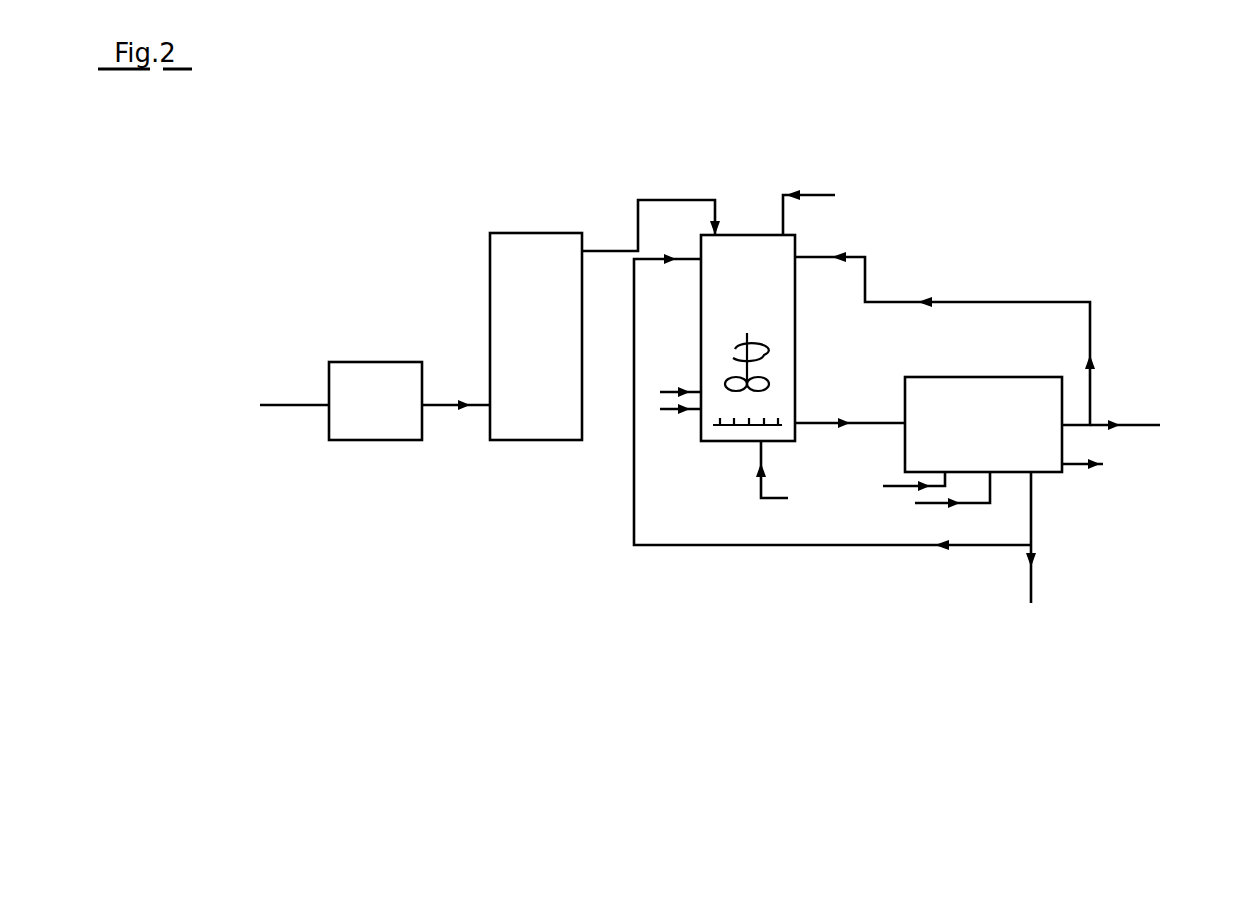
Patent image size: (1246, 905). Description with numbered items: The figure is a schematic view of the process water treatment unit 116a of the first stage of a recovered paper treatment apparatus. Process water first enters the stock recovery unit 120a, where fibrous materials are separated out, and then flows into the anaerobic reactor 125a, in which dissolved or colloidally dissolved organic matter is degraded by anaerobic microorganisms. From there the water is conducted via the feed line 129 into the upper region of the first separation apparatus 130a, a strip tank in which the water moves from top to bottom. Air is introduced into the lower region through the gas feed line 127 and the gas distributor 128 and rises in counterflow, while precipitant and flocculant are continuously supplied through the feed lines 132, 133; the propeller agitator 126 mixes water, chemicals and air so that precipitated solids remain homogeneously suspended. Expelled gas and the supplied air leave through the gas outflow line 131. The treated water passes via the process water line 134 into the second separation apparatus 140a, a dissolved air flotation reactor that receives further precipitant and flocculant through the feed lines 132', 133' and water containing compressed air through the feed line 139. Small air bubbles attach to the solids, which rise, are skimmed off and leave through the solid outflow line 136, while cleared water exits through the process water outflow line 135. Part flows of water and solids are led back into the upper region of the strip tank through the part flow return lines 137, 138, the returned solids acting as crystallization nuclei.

The process water treatment unit 116a is at (552, 558).
The stock recovery unit 120a is at (366, 375).
The anaerobic reactor 125a is at (533, 248).
The propeller agitator 126 is at (769, 382).
The gas feed line 127 is at (773, 494).
The gas distributor 128 is at (724, 428).
The feed line 129 is at (668, 200).
The first separation apparatus 130a is at (752, 247).
The gas outflow line 131 is at (826, 195).
The feed line for precipitant 132 is at (672, 368).
The feed line for flocculant 133 is at (672, 429).
The process water line 134 is at (868, 420).
The process water outflow line 135 is at (1147, 428).
The solid outflow line 136 is at (1035, 495).
The part flow return line for process water 137 is at (1092, 322).
The part flow return line for solids 138 is at (632, 497).
The feed line for water containing compressed air 139 is at (1068, 470).
The feed line for precipitant 132' is at (882, 506).
The feed line for flocculant 133' is at (971, 506).
The second separation apparatus 140a is at (964, 397).